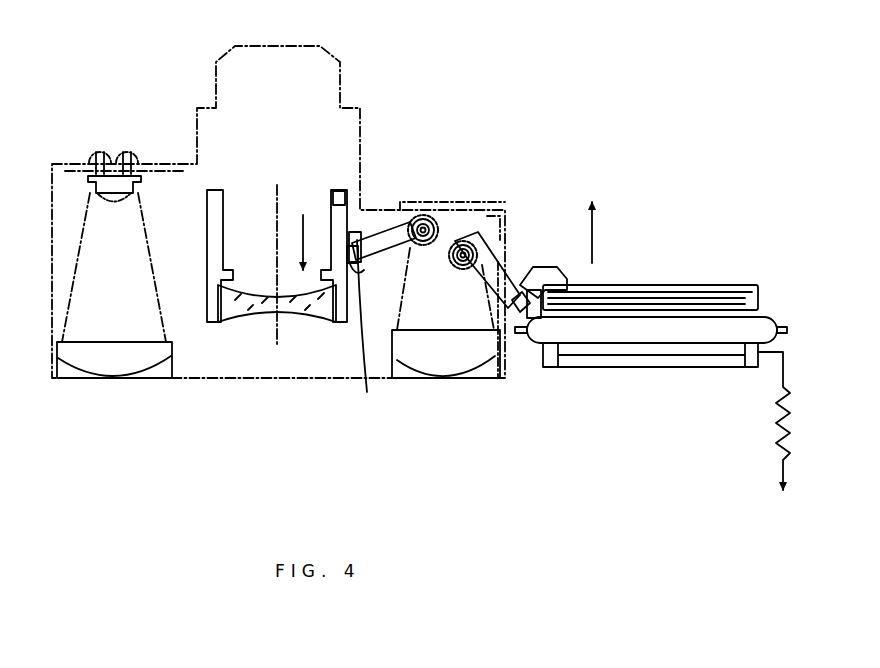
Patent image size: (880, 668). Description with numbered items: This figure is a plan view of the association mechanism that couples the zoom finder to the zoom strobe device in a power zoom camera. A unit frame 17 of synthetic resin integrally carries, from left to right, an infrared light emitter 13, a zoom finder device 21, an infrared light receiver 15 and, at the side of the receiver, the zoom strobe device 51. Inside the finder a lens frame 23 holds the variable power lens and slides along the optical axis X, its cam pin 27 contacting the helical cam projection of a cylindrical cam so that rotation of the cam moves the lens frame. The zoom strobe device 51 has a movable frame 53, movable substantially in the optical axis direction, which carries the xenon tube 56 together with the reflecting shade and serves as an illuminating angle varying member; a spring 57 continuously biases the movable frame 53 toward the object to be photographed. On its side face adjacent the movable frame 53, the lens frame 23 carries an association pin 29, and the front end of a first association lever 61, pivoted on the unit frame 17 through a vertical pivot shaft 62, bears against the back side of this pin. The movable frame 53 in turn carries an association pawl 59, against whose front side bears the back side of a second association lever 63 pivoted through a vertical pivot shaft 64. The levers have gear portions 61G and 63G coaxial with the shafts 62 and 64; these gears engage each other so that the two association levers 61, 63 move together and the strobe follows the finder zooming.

The infrared light emitter 13 is at (103, 386).
The infrared light receiver 15 is at (428, 386).
The unit frame 17 is at (240, 84).
The zoom finder device 21 is at (273, 388).
The lens frame 23 is at (337, 193).
The cam pin 27 is at (372, 228).
The association pin 29 is at (364, 326).
The zoom strobe device 51 is at (652, 346).
The movable frame 53 is at (662, 286).
The xenon tube 56 is at (768, 316).
The spring 57 is at (773, 440).
The association pawl 59 is at (548, 268).
The first association lever 61 is at (393, 236).
The gear portion 61G is at (447, 224).
The vertical pivot shaft 62 is at (418, 240).
The second association lever 63 is at (518, 266).
The gear portion 63G is at (466, 240).
The vertical pivot shaft 64 is at (459, 268).
The optical axis X is at (275, 196).